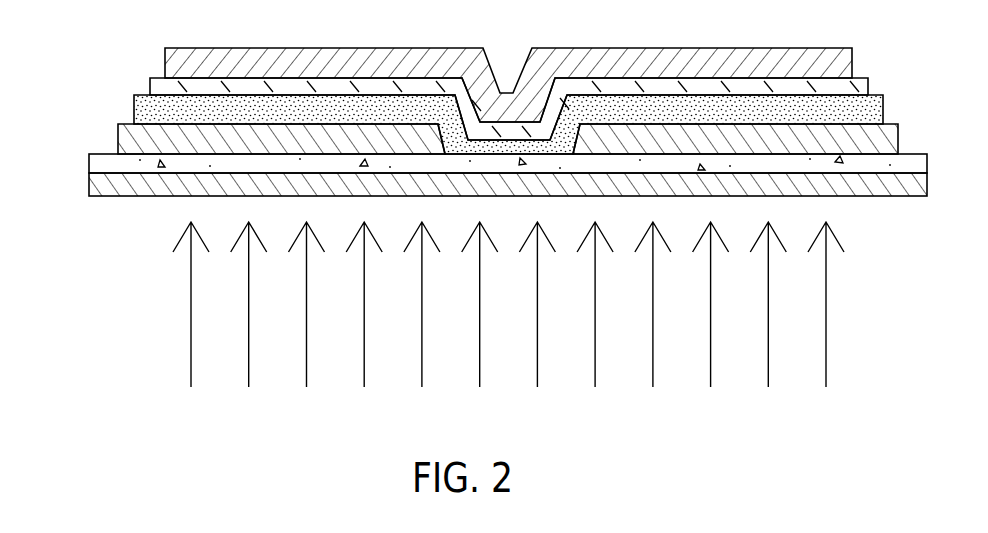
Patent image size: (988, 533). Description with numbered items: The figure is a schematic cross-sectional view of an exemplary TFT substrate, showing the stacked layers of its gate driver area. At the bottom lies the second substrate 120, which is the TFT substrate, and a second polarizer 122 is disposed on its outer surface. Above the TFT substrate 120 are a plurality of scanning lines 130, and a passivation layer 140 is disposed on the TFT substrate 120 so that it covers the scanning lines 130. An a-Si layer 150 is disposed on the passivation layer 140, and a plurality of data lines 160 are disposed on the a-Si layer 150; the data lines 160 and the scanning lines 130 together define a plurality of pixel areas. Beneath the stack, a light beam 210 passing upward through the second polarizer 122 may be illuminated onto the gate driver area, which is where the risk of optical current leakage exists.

The second substrate 120 is at (104, 169).
The second polarizer 122 is at (90, 188).
The scanning lines 130 is at (128, 137).
The passivation layer 140 is at (150, 108).
The a-Si layer 150 is at (152, 86).
The data lines 160 is at (165, 55).
The light beam 210 is at (191, 343).